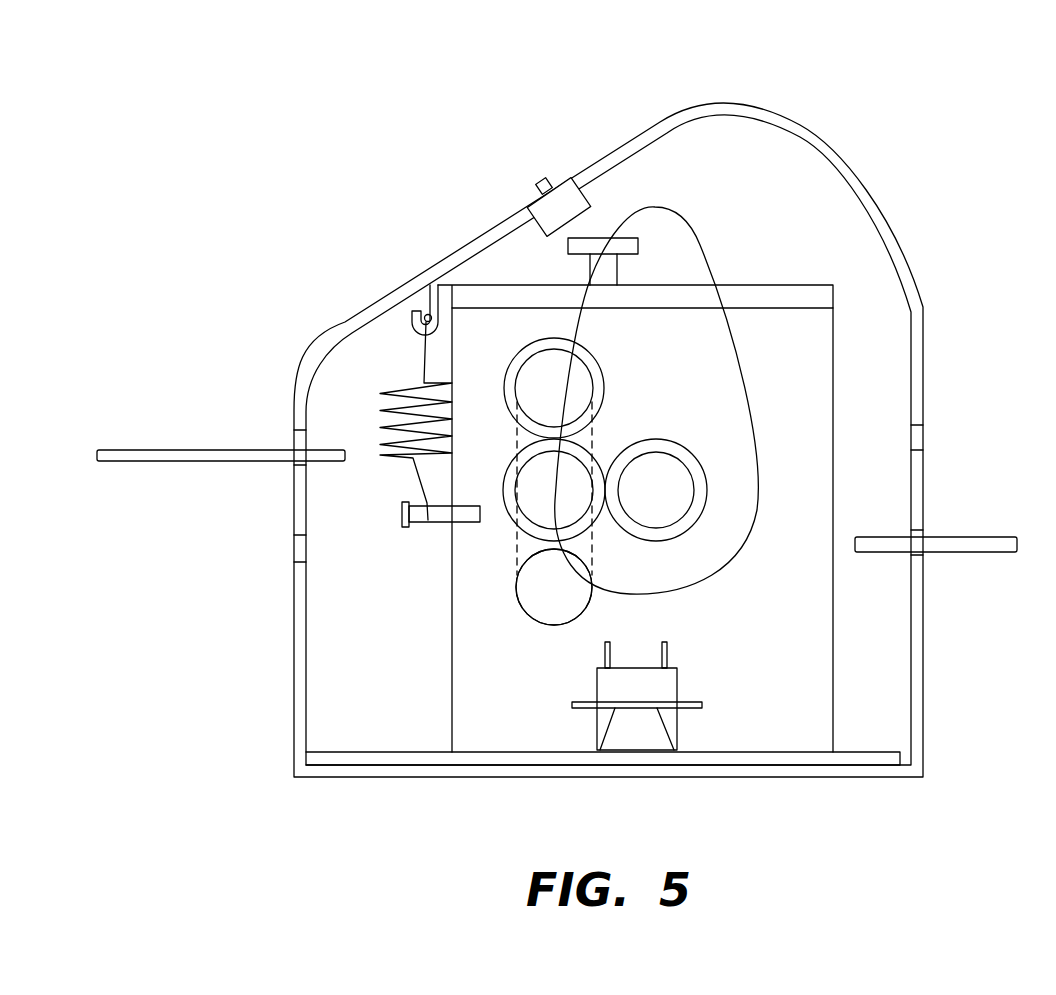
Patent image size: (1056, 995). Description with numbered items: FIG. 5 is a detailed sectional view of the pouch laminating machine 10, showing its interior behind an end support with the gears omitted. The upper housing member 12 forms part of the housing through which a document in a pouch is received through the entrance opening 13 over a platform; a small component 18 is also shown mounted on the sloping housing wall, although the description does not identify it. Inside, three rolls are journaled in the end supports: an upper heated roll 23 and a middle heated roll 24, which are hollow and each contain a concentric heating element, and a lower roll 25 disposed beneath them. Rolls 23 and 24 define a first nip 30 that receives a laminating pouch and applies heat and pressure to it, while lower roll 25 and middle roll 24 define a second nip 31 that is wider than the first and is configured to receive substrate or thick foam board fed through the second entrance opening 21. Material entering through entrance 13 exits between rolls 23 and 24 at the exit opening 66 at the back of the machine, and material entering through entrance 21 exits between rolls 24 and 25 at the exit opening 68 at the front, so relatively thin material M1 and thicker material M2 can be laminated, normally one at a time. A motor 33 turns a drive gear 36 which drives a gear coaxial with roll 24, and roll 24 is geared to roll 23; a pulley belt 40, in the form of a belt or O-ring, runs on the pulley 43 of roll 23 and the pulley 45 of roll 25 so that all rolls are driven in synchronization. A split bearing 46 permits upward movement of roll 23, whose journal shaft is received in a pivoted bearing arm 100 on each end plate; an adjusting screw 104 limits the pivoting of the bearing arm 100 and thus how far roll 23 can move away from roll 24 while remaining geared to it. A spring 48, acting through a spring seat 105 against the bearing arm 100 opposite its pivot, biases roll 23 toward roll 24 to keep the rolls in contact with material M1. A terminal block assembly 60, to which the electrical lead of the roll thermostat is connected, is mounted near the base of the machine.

The pouch laminating machine 10 is at (262, 76).
The upper housing member 12 is at (773, 116).
The entrance opening 13 is at (294, 443).
The sensor 18 is at (544, 181).
The entrance opening 21 is at (918, 536).
The upper heated roll 23 is at (584, 388).
The middle heated roll 24 is at (534, 511).
The lower roll 25 is at (542, 617).
The first nip 30 is at (592, 437).
The second nip 31 is at (592, 543).
The motor 33 is at (674, 192).
The drive gear 36 is at (696, 468).
The pulley belt 40 is at (517, 547).
The pulley 43 is at (587, 366).
The pulley 45 is at (520, 602).
The split bearing 46 is at (781, 291).
The spring 48 is at (397, 395).
The terminal block assembly 60 is at (667, 685).
The exit opening 66 is at (918, 434).
The exit opening 68 is at (294, 547).
The pivoted bearing arm 100 is at (481, 293).
The adjusting screw 104 is at (626, 239).
The spring seat 105 is at (437, 297).
The relatively thin material M1 is at (177, 451).
The thicker material M2 is at (1007, 538).